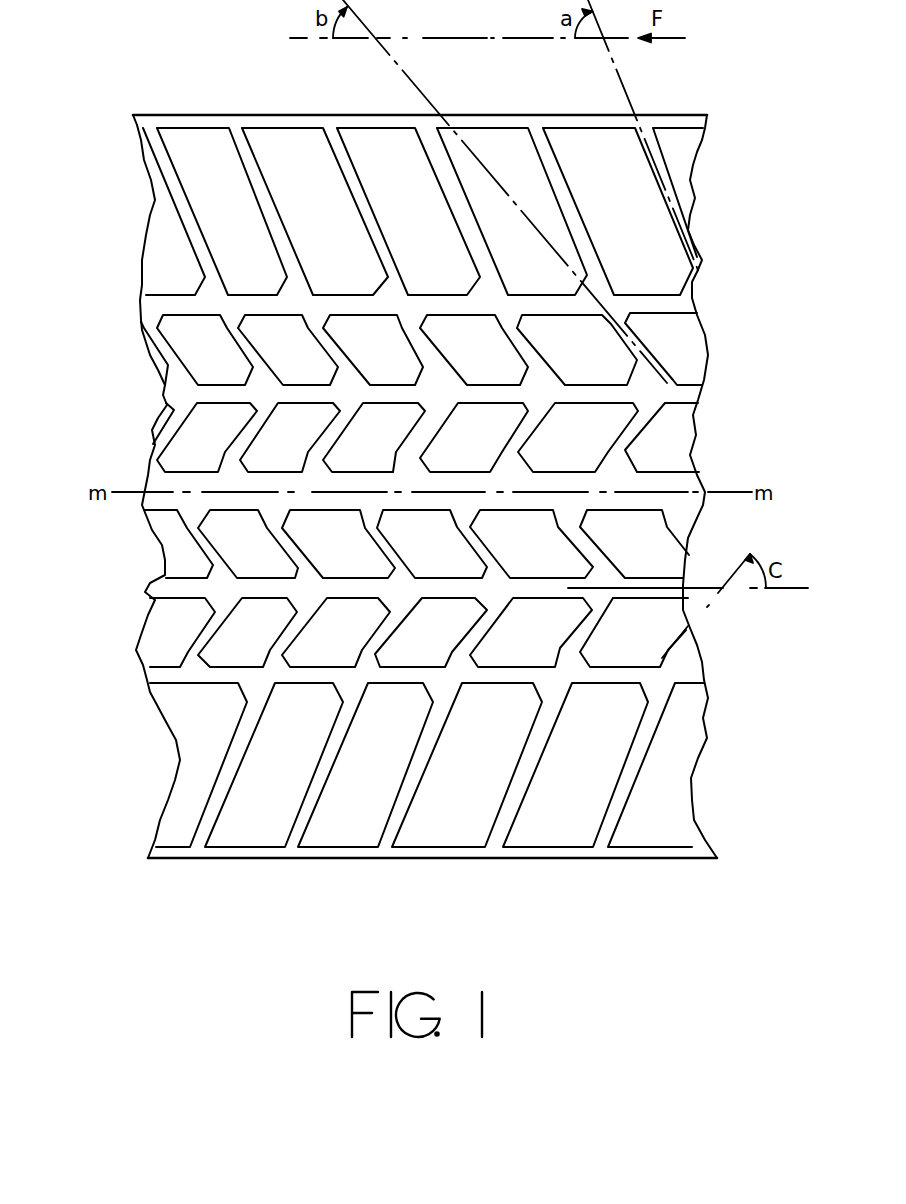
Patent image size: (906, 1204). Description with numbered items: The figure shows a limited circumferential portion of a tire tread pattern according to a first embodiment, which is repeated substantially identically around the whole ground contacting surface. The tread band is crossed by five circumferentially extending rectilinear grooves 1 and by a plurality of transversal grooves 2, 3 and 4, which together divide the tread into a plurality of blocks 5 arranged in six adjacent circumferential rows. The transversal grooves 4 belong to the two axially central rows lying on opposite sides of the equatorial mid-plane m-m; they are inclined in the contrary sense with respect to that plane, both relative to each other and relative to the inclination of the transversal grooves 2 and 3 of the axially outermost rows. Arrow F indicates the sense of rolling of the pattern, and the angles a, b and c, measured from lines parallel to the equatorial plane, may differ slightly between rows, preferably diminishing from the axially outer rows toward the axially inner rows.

The circumferentially extending rectilinear grooves 1 is at (162, 305).
The transversal grooves 2 is at (232, 762).
The transversal grooves 3 is at (290, 637).
The transversal grooves 4 is at (385, 545).
The blocks 5 is at (538, 559).